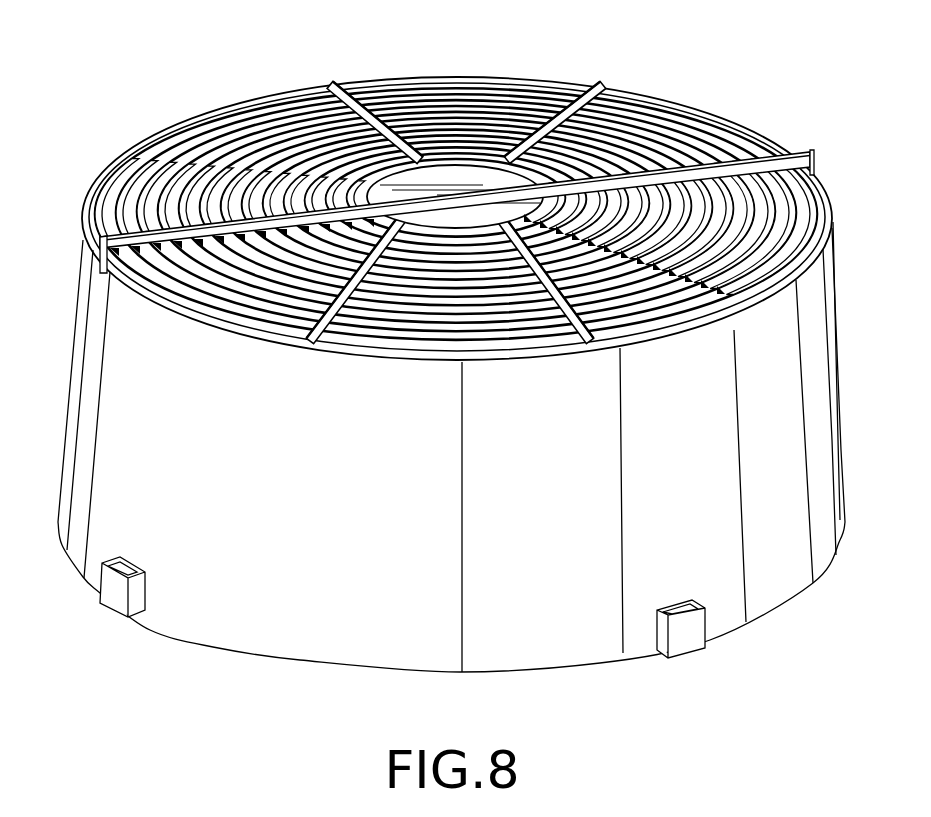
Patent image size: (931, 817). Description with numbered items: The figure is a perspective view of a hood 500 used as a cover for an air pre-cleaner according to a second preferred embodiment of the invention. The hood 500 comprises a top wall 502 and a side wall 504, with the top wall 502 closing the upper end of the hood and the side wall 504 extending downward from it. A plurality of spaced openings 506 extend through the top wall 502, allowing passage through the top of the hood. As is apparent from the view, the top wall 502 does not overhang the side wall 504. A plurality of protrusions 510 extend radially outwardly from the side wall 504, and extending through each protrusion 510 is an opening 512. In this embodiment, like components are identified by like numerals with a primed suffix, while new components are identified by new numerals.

The hood 500 is at (227, 648).
The top wall 502 is at (500, 95).
The side wall 504 is at (762, 575).
The spaced openings 506 is at (173, 203).
The protrusions 510 is at (687, 643).
The opening 512 is at (130, 560).